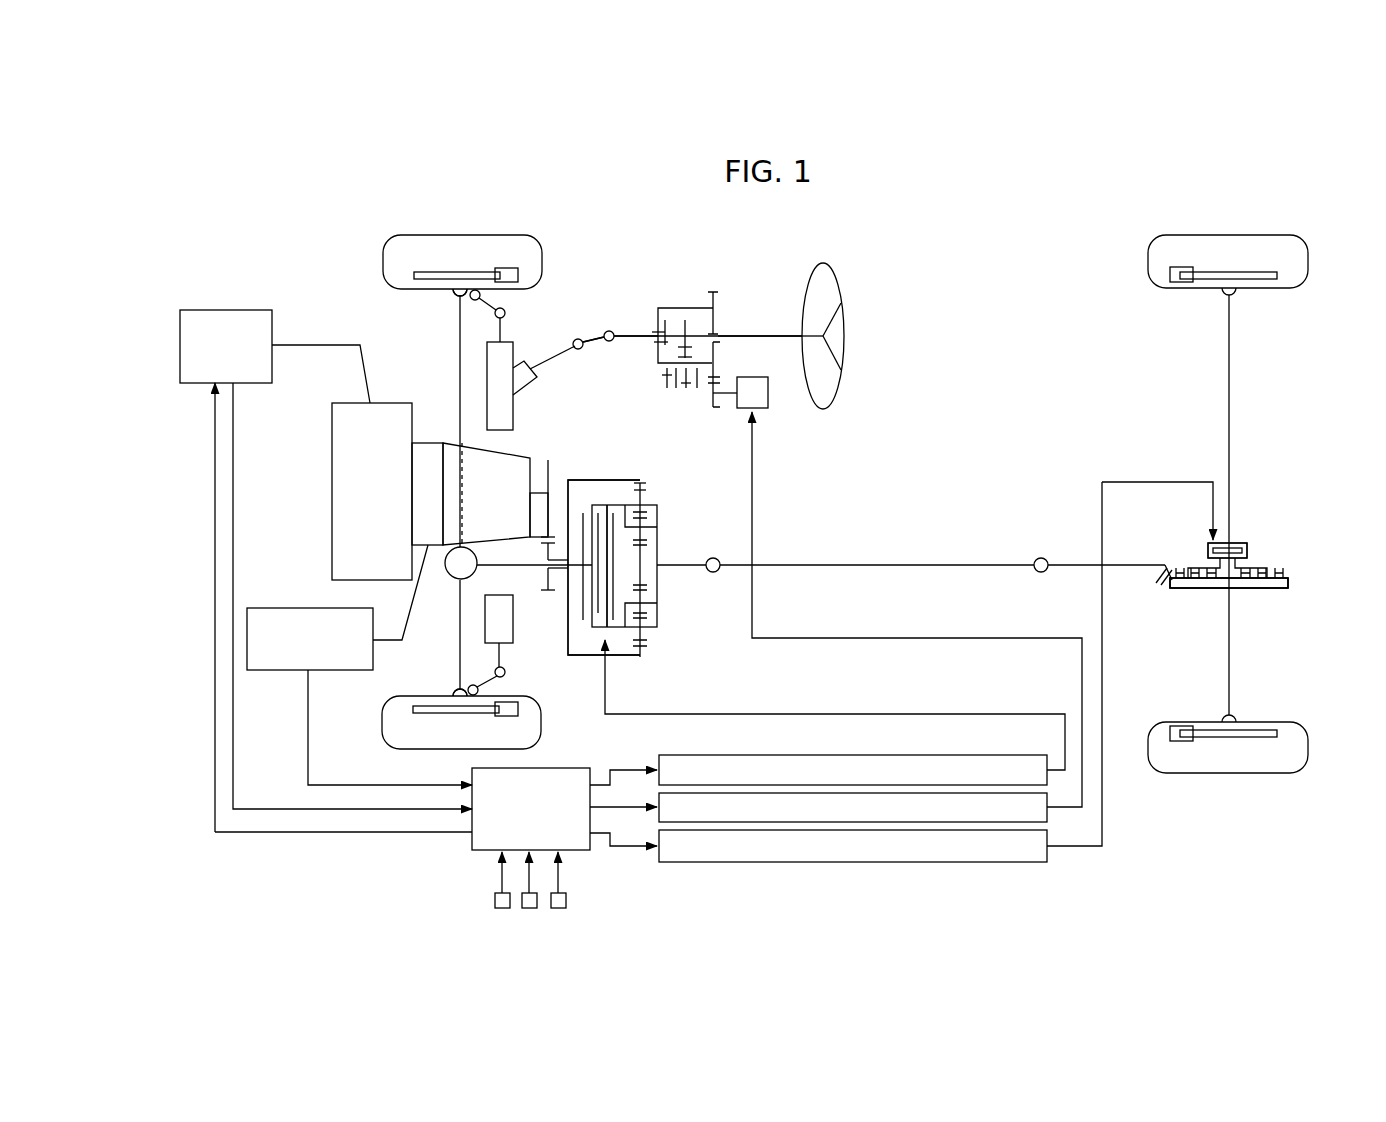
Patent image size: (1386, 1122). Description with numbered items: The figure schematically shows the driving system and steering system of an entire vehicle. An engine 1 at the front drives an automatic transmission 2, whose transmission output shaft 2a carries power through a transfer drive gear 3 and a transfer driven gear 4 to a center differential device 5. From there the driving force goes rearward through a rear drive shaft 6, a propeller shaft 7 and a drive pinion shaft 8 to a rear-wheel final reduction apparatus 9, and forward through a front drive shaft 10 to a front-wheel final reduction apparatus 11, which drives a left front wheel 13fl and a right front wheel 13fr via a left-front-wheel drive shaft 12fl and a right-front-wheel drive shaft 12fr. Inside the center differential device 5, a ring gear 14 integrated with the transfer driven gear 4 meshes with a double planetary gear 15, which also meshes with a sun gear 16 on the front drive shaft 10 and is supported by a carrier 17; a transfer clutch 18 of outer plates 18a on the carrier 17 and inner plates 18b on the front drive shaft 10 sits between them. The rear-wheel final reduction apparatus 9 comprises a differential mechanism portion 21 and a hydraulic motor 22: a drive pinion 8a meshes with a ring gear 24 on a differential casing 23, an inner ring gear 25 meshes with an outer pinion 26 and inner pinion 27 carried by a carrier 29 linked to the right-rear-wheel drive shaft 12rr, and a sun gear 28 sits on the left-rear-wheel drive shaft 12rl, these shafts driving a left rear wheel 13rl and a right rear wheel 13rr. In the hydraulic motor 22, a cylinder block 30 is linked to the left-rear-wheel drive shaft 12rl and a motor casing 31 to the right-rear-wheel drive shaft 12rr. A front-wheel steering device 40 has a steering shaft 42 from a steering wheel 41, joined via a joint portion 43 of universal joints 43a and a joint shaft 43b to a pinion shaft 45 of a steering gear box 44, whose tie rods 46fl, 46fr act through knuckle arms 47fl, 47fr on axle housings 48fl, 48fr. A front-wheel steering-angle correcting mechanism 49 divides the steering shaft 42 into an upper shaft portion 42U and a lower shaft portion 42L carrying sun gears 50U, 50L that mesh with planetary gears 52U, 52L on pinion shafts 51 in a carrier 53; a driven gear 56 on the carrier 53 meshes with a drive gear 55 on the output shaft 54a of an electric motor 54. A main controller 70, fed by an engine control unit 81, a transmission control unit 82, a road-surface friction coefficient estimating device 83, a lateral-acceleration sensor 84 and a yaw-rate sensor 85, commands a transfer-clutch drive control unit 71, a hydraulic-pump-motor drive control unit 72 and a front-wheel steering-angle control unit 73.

The engine 1 is at (332, 435).
The automatic transmission 2 is at (424, 443).
The transmission output shaft 2a is at (537, 493).
The transfer drive gear 3 is at (548, 460).
The transfer driven gear 4 is at (548, 592).
The center differential device 5 is at (690, 662).
The rear drive shaft 6 is at (696, 562).
The propeller shaft 7 is at (856, 563).
The drive pinion shaft 8 is at (1070, 563).
The drive pinion 8a is at (1162, 565).
The rear-wheel final reduction apparatus 9 is at (1287, 650).
The front drive shaft 10 is at (500, 565).
The front-wheel final reduction apparatus 11 is at (452, 580).
The right-front-wheel drive shaft 12fr is at (460, 338).
The left-front-wheel drive shaft 12fl is at (460, 662).
The right-rear-wheel drive shaft 12rr is at (1230, 338).
The left-rear-wheel drive shaft 12rl is at (1229, 690).
The right front wheel 13fr is at (383, 256).
The left front wheel 13fl is at (382, 740).
The right rear wheel 13rr is at (1260, 235).
The left rear wheel 13rl is at (1205, 773).
The ring gear 14 is at (647, 657).
The double planetary gear 15 is at (650, 637).
The sun gear 16 is at (655, 545).
The carrier 17 is at (650, 492).
The transfer clutch 18 is at (614, 494).
The outer plates 18a is at (610, 592).
The inner plates 18b is at (600, 632).
The differential mechanism portion 21 is at (1166, 605).
The hydraulic motor 22 is at (1283, 478).
The differential casing 23 is at (1282, 589).
The ring gear 24 is at (1290, 580).
The ring gear 25 is at (1282, 571).
The outer pinion 26 is at (1262, 590).
The inner pinion 27 is at (1205, 590).
The sun gear 28 is at (1222, 590).
The carrier 29 is at (1262, 567).
The cylinder block 30 is at (1233, 546).
The motor casing 31 is at (1213, 482).
The front-wheel steering device 40 is at (782, 258).
The steering wheel 41 is at (843, 290).
The steering shaft 42 is at (806, 418).
The lower shaft portion 42L is at (628, 335).
The upper shaft portion 42U is at (778, 335).
The joint portion 43 is at (580, 356).
The universal joints 43a is at (610, 331).
The joint shaft 43b is at (605, 341).
The steering gear box 44 is at (498, 597).
The pinion shaft 45 is at (546, 368).
The tie rod 46fr is at (505, 318).
The tie rod 46fl is at (505, 670).
The knuckle arm 47fr is at (481, 297).
The knuckle arm 47fl is at (479, 689).
The axle housing 48fr is at (462, 290).
The axle housing 48fl is at (455, 694).
The front-wheel steering-angle correcting mechanism 49 is at (637, 228).
The sun gear 50L is at (665, 320).
The sun gear 50U is at (685, 320).
The pinion shafts 51 is at (674, 388).
The planetary gear 52L is at (664, 378).
The planetary gear 52U is at (684, 390).
The carrier 53 is at (697, 375).
The electric motor 54 is at (769, 398).
The output shaft 54a is at (722, 380).
The drive gear 55 is at (713, 408).
The driven gear 56 is at (718, 292).
The main controller 70 is at (566, 768).
The transfer-clutch drive control unit 71 is at (1000, 755).
The hydraulic-pump-motor drive control unit 72 is at (1058, 854).
The front-wheel steering-angle control unit 73 is at (1060, 818).
The engine control unit 81 is at (196, 310).
The transmission control unit 82 is at (296, 608).
The road-surface friction coefficient estimating device 83 is at (502, 908).
The lateral-acceleration sensor 84 is at (530, 908).
The yaw-rate sensor 85 is at (559, 908).